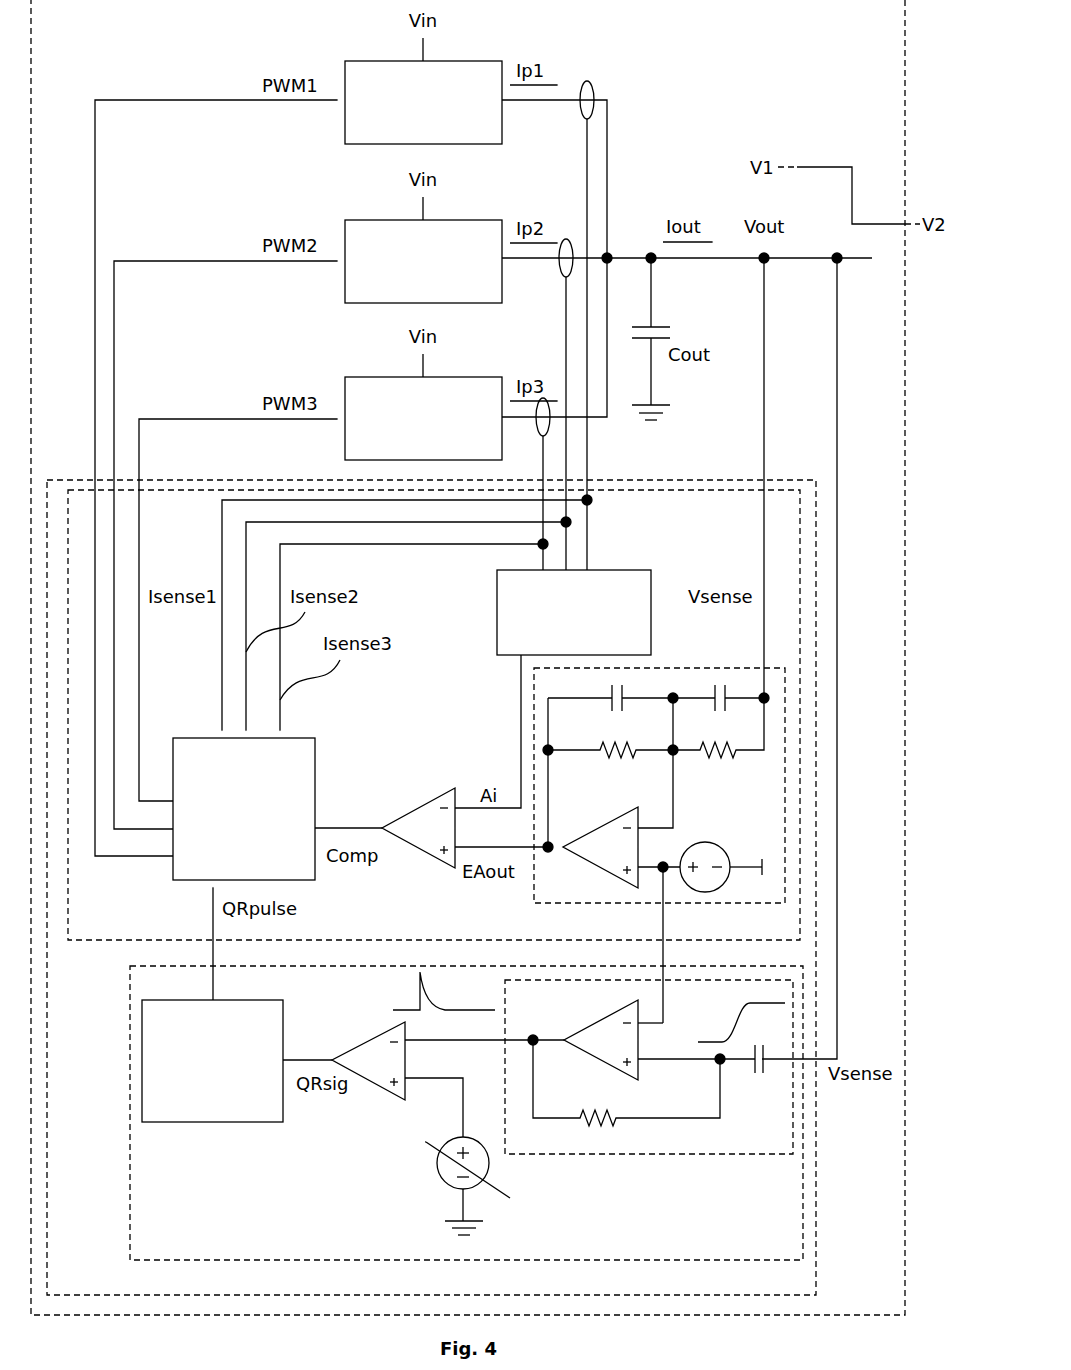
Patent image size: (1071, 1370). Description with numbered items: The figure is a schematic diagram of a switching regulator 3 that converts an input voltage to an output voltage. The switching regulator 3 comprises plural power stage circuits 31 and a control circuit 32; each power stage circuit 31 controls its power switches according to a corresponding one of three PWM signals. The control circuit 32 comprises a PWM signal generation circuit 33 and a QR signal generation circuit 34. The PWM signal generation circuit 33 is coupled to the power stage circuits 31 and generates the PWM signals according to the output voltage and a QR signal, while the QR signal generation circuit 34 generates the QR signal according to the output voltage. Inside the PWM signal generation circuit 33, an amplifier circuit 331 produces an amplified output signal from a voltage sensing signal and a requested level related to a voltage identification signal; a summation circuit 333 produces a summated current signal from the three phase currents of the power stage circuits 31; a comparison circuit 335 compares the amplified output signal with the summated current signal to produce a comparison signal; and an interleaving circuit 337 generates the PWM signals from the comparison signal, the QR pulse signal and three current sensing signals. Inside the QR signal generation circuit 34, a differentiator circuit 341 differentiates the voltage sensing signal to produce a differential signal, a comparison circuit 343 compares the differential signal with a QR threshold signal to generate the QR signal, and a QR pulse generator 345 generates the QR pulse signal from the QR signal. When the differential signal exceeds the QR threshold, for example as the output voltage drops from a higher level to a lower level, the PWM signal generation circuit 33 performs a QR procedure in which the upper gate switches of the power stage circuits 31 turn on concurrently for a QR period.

The switching regulator 3 is at (63, 24).
The power stage circuit 31 is at (377, 140).
The control circuit 32 is at (100, 1284).
The PWM signal generation circuit 33 is at (108, 932).
The QR signal generation circuit 34 is at (182, 1248).
The amplifier circuit 331 is at (589, 895).
The summation circuit 333 is at (545, 652).
The comparison circuit 335 is at (410, 805).
The interleaving circuit 337 is at (219, 872).
The differentiator circuit 341 is at (550, 1145).
The comparison circuit 343 is at (372, 1042).
The QR pulse generator 345 is at (186, 1116).